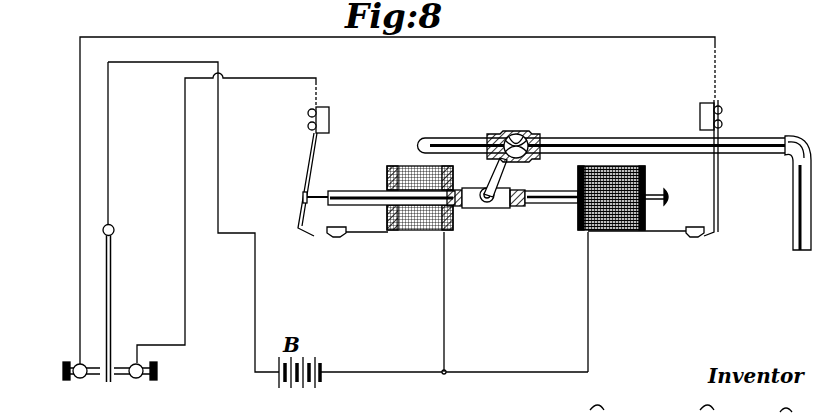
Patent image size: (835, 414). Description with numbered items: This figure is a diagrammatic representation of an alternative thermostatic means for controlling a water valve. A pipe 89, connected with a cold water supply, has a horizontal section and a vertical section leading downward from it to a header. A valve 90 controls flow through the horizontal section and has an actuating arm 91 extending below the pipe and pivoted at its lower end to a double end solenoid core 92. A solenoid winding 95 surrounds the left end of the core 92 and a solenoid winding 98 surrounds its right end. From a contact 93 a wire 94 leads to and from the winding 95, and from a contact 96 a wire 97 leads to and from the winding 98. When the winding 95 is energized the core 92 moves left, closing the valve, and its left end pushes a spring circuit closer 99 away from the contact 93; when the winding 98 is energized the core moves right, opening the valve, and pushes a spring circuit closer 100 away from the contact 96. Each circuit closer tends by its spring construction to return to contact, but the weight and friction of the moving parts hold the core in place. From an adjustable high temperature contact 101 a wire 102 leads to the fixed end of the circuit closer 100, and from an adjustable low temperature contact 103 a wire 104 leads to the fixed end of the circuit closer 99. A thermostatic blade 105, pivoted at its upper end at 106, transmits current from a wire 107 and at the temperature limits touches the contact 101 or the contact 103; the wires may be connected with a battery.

The pipe 89 is at (800, 218).
The valve 90 is at (506, 141).
The actuating arm 91 is at (503, 168).
The double end solenoid core 92 is at (497, 208).
The contact 93 is at (335, 240).
The wire 94 is at (446, 270).
The solenoid winding 95 is at (420, 228).
The contact 96 is at (693, 238).
The wire 97 is at (586, 284).
The solenoid winding 98 is at (613, 232).
The spring circuit closer 99 is at (306, 165).
The spring circuit closer 100 is at (720, 195).
The adjustable high temperature contact 101 is at (81, 379).
The wire 102 is at (80, 238).
The adjustable low temperature contact 103 is at (137, 379).
The wire 104 is at (257, 79).
The thermostatic blade 105 is at (113, 308).
The pivot 106 is at (114, 230).
The wire 107 is at (109, 160).